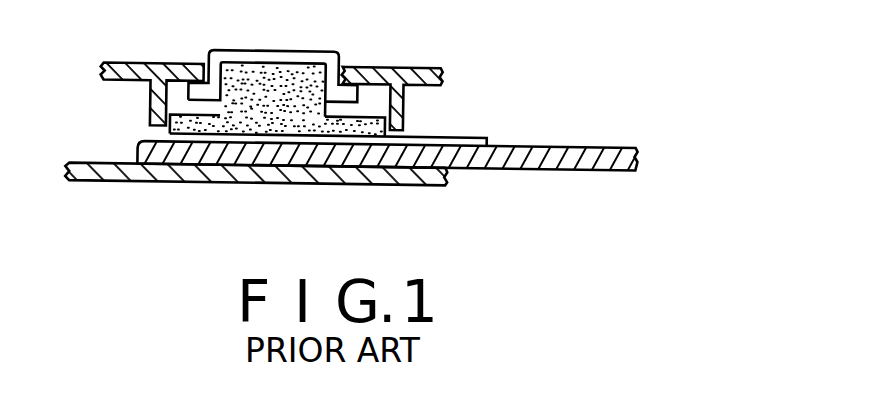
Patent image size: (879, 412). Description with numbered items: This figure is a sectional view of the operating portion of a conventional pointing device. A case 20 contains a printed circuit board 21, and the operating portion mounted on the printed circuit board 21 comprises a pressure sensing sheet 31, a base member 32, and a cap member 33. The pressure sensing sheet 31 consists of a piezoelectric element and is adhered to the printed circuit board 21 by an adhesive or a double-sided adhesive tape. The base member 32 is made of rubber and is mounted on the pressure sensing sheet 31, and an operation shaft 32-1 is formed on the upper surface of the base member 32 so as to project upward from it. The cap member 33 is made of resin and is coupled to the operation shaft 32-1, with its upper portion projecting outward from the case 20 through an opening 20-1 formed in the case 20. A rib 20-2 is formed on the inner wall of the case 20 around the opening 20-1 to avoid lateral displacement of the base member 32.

The case 20 is at (253, 119).
The opening 20-1 is at (338, 65).
The rib 20-2 is at (158, 113).
The printed circuit board 21 is at (597, 144).
The pressure sensing sheet 31 is at (458, 136).
The base member 32 is at (305, 126).
The operation shaft 32-1 is at (240, 76).
The cap member 33 is at (287, 63).